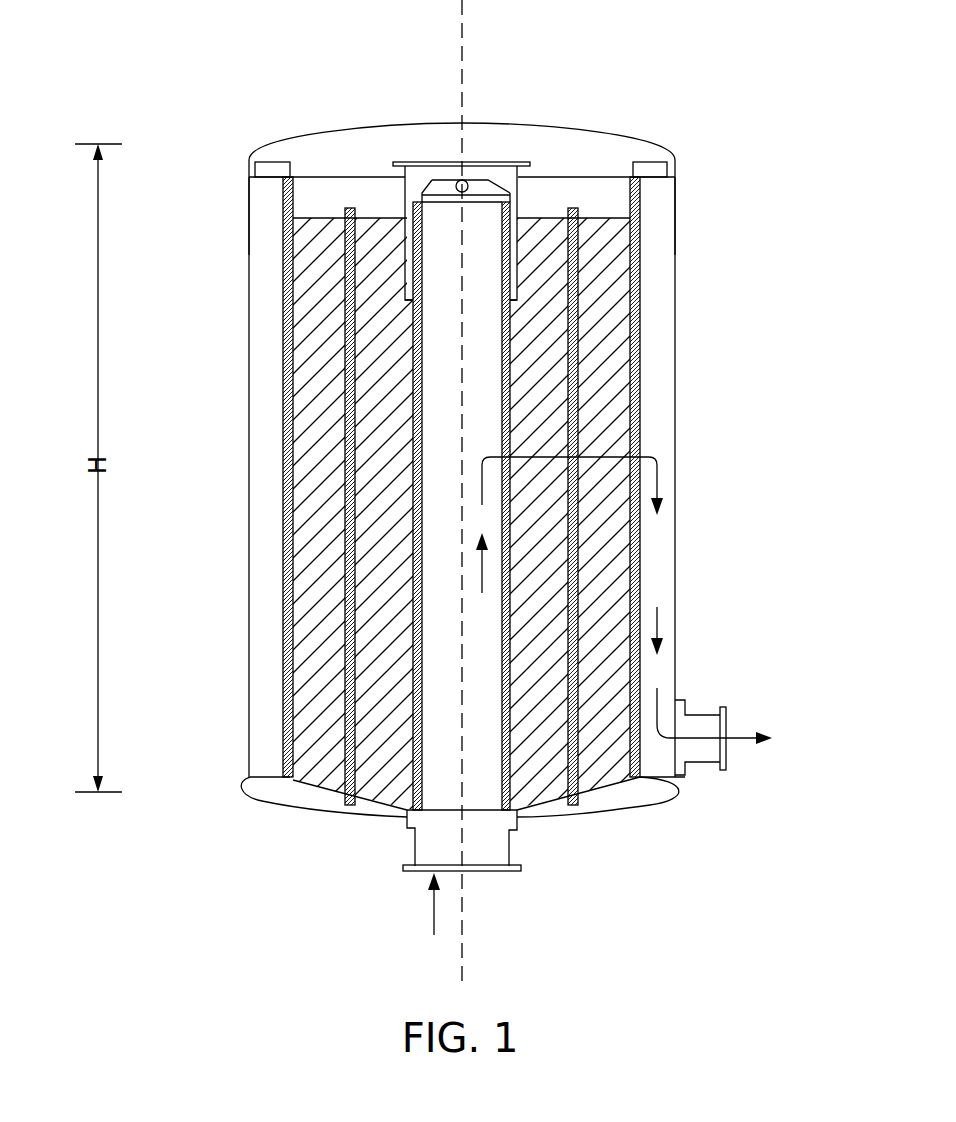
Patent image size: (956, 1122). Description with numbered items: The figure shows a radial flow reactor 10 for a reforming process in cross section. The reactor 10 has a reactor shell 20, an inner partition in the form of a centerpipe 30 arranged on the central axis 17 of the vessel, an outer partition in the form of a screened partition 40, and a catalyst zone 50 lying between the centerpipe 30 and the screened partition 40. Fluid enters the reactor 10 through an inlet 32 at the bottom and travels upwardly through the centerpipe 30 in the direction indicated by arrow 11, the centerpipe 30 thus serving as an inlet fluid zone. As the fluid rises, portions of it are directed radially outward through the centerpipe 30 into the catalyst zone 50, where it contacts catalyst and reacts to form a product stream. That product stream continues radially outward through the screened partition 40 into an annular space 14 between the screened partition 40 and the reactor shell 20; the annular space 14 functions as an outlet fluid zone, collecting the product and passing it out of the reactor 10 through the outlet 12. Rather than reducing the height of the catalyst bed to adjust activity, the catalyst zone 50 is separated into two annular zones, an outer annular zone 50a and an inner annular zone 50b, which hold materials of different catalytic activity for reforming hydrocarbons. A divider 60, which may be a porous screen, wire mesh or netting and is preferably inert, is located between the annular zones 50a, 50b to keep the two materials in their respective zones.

The radial flow reactor 10 is at (196, 730).
The arrow 11 is at (433, 910).
The outlet 12 is at (707, 713).
The annular space 14 is at (258, 254).
The central axis 17 is at (465, 30).
The reactor shell 20 is at (250, 358).
The centerpipe 30 is at (420, 356).
The inlet 32 is at (480, 872).
The screened partition 40 is at (283, 450).
The catalyst zone 50 is at (286, 830).
The outer annular zone 50a is at (316, 228).
The inner annular zone 50b is at (388, 240).
The divider 60 is at (345, 592).